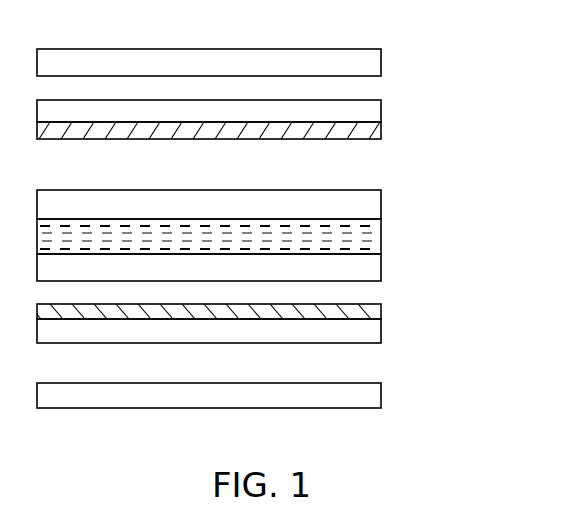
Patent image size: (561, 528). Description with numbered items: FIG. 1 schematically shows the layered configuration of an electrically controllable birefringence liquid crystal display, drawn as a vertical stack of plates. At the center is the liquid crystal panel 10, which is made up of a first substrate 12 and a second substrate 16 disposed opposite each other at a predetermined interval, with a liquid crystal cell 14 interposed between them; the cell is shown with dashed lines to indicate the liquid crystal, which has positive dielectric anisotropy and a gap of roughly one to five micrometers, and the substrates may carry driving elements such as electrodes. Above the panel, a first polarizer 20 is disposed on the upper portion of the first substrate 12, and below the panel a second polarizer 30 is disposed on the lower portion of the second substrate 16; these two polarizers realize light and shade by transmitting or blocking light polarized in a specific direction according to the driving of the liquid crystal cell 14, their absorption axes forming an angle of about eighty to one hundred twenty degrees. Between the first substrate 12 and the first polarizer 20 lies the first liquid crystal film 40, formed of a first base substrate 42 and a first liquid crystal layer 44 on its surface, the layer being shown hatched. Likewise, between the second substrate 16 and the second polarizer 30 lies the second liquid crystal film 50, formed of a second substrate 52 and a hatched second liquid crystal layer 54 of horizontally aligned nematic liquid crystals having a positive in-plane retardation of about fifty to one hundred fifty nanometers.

The liquid crystal panel 10 is at (272, 236).
The first substrate 12 is at (370, 202).
The liquid crystal cell 14 is at (370, 236).
The second substrate 16 is at (245, 272).
The first polarizer 20 is at (370, 63).
The second polarizer 30 is at (370, 396).
The first liquid crystal film 40 is at (262, 121).
The first base substrate 42 is at (370, 112).
The first liquid crystal layer 44 is at (372, 133).
The second liquid crystal film 50 is at (267, 327).
The second substrate 52 is at (370, 316).
The second liquid crystal layer 54 is at (370, 336).